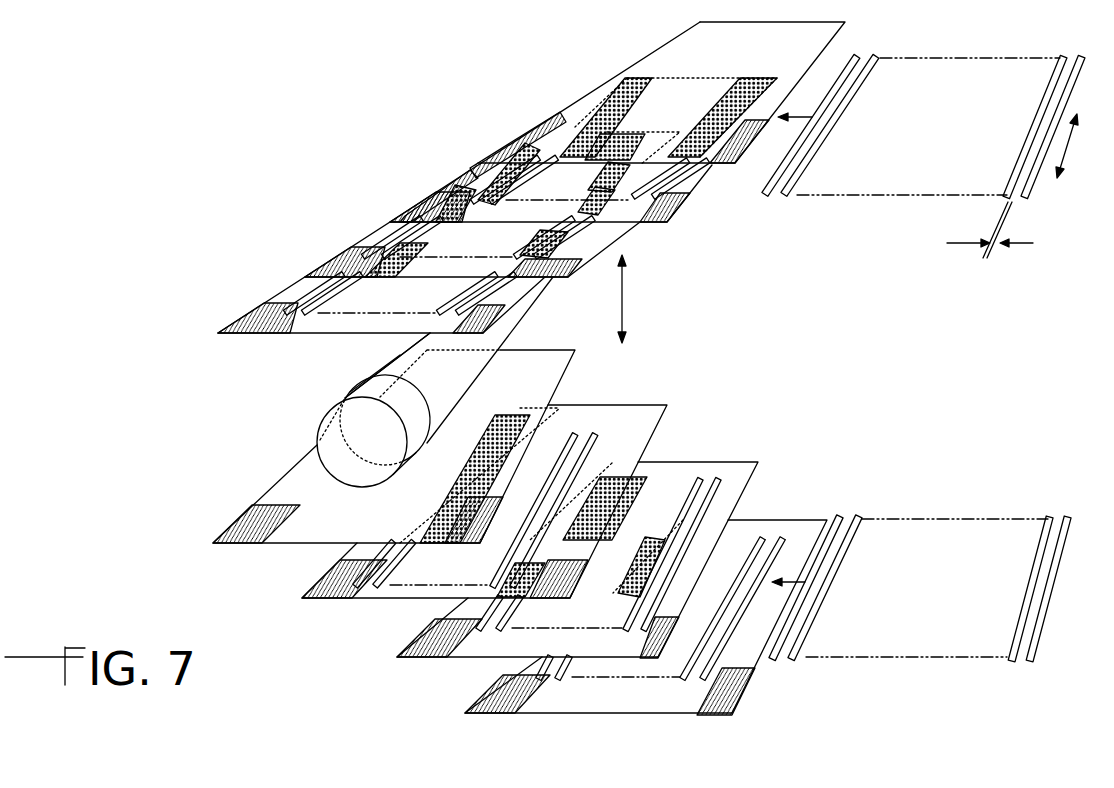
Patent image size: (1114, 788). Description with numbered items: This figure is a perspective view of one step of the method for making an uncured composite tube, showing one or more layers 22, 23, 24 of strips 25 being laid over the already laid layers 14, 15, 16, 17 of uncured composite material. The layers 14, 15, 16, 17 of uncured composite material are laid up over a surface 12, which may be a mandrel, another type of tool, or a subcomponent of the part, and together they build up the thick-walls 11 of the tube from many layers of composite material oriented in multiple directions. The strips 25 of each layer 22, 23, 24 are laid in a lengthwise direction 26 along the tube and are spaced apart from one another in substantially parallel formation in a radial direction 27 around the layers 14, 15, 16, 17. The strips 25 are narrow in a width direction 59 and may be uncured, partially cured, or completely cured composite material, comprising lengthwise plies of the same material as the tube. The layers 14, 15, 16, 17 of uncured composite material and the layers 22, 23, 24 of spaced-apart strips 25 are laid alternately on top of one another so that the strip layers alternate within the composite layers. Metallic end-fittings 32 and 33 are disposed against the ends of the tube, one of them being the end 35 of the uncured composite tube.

The thick-walls 11 is at (500, 85).
The surface 12 is at (400, 362).
The layer of uncured composite material 14 is at (327, 307).
The layer of uncured composite material 15 is at (393, 223).
The layer of uncured composite material 16 is at (490, 192).
The layer of uncured composite material 17 is at (660, 66).
The layer of compacted, spaced-apart strips 22 is at (343, 303).
The layer of compacted, spaced-apart strips 23 is at (400, 220).
The layer of compacted, spaced-apart strips 24 is at (480, 168).
The strips 25 is at (541, 187).
The lengthwise direction 26 is at (1067, 150).
The radial direction 27 is at (625, 300).
The metallic end-fitting 32 is at (337, 418).
The metallic end-fitting 33 is at (545, 283).
The end of the uncured composite tube 35 is at (353, 381).
The width direction 59 is at (993, 262).